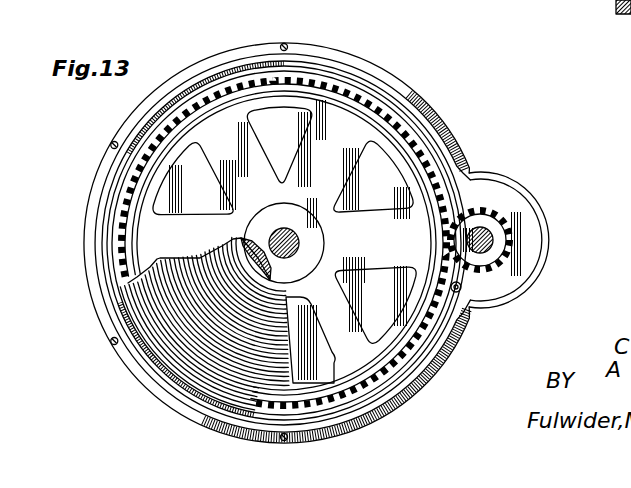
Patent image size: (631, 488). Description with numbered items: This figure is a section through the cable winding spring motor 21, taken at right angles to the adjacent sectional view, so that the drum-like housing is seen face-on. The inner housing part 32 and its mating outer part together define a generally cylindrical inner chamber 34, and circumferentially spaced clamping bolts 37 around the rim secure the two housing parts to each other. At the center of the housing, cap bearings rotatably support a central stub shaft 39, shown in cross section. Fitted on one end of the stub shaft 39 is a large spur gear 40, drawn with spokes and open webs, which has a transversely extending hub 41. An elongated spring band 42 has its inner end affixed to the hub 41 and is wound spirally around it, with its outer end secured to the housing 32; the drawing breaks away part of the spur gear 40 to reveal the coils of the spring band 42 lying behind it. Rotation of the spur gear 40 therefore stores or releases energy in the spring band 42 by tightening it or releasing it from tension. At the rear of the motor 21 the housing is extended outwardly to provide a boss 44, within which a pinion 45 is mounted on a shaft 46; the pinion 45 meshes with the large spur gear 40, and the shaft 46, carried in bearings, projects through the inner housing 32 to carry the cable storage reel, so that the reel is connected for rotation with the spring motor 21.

The cable winding spring motor 21 is at (193, 62).
The inner housing part 32 is at (389, 82).
The inner chamber 34 is at (383, 177).
The clamping bolts 37 is at (287, 45).
The central stub shaft 39 is at (283, 238).
The large spur gear 40 is at (397, 333).
The hub 41 is at (262, 278).
The spring band 42 is at (207, 301).
The boss 44 is at (523, 188).
The pinion 45 is at (501, 230).
The shaft 46 is at (495, 243).